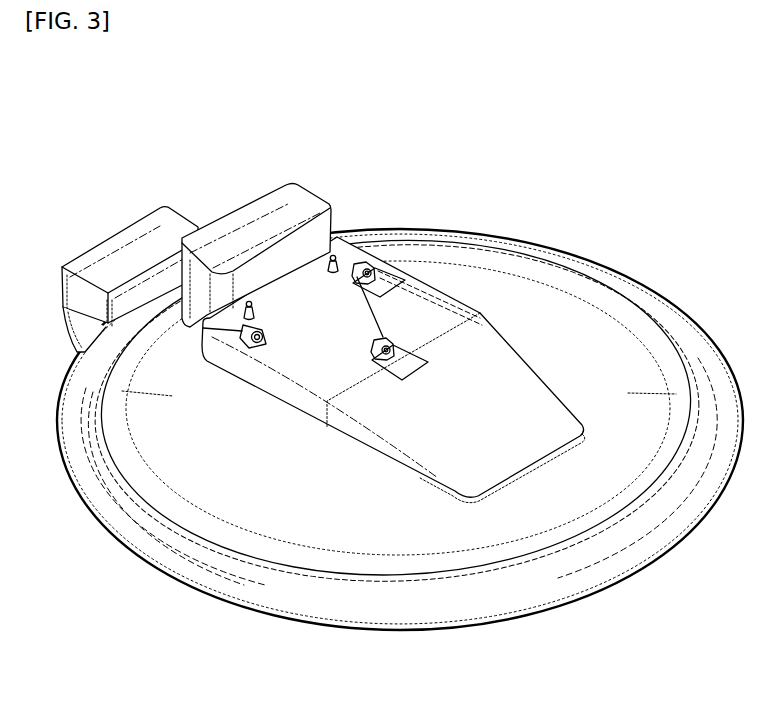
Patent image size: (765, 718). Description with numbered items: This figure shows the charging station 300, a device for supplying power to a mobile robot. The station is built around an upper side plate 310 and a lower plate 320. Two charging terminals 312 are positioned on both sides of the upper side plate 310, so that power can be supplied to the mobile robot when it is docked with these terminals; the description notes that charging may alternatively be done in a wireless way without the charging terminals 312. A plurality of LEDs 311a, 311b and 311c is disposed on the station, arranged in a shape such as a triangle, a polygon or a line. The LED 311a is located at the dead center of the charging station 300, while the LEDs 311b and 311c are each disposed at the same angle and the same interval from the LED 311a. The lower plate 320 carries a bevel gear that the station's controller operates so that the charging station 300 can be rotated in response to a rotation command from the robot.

The charging station 300 is at (176, 94).
The upper side plate 310 is at (583, 302).
The LED 311a is at (405, 350).
The LED 311b is at (262, 340).
The LED 311c is at (375, 266).
The charging terminals 312 is at (252, 302).
The lower plate 320 is at (557, 575).